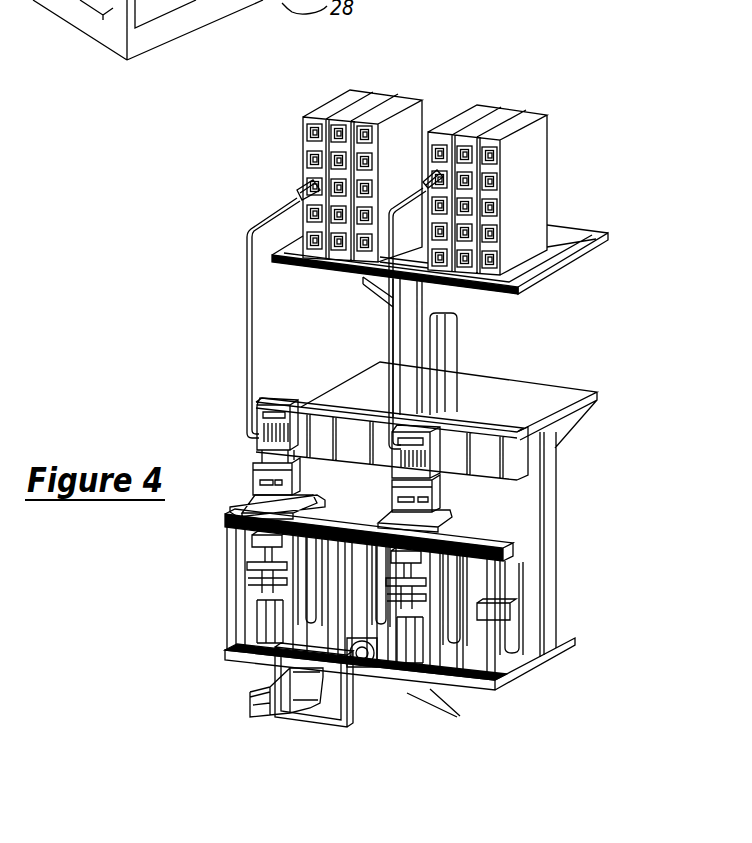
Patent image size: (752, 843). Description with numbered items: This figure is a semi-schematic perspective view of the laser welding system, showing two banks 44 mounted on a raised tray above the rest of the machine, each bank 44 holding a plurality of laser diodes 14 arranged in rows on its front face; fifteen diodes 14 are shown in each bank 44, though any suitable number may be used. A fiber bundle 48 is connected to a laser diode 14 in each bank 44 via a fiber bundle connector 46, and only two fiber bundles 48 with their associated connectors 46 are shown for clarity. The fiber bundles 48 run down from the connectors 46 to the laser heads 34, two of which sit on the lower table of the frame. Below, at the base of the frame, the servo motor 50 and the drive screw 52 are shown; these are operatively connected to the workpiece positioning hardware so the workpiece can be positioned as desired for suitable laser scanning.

The laser diode 14 is at (307, 157).
The bank 44 is at (420, 101).
The fiber bundle connector 46 is at (313, 196).
The fiber bundle 48 is at (247, 302).
The laser head 34 is at (253, 482).
The servo motor 50 is at (282, 697).
The drive screw 52 is at (372, 658).